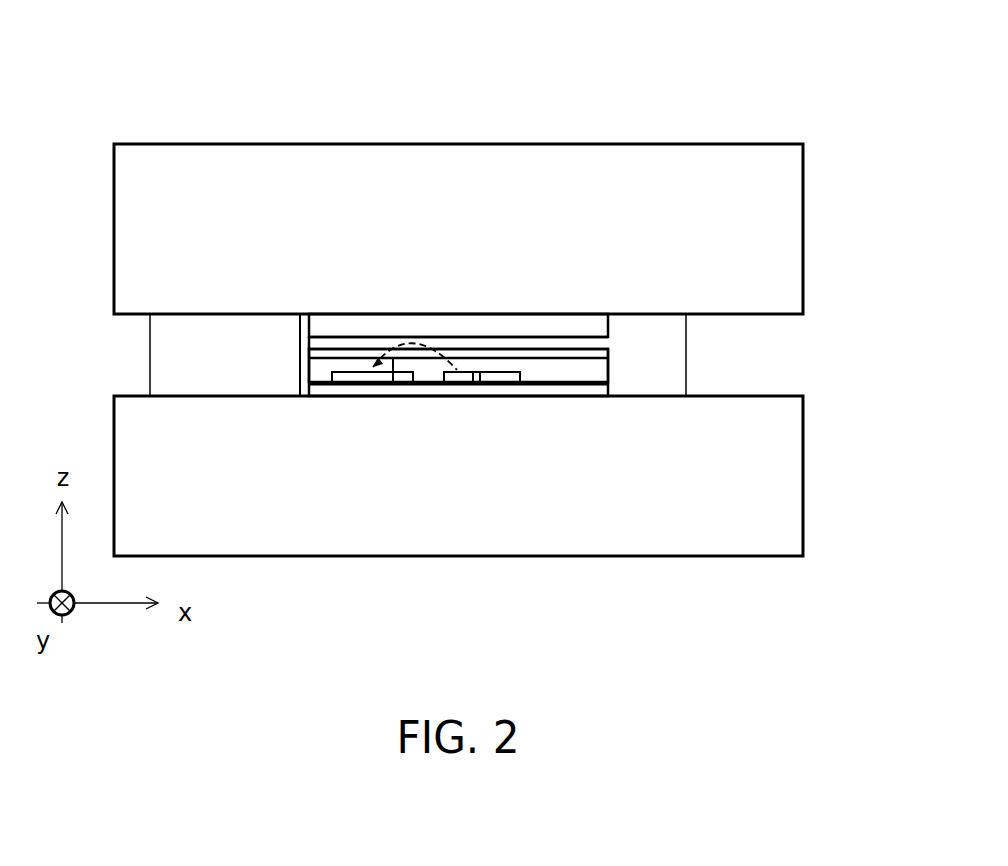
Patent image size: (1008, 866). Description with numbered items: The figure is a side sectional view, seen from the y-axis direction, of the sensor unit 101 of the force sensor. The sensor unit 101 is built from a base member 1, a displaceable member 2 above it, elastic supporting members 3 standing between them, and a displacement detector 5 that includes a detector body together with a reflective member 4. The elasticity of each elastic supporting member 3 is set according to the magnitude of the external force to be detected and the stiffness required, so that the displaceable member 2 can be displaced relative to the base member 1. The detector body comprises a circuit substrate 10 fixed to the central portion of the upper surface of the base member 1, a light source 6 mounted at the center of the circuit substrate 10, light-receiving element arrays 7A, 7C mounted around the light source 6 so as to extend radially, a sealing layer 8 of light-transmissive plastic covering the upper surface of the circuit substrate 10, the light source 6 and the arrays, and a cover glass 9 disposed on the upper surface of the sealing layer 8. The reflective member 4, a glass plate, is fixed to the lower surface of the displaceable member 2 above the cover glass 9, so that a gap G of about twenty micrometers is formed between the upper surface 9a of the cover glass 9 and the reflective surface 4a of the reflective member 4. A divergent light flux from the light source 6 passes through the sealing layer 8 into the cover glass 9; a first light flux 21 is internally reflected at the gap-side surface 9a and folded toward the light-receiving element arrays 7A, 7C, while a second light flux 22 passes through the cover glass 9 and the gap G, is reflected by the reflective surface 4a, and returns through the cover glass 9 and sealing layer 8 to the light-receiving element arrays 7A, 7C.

The sensor unit 101 is at (753, 103).
The base member 1 is at (297, 552).
The displaceable member 2 is at (586, 142).
The elastic supporting member 3 is at (148, 370).
The reflective member 4 is at (610, 318).
The reflective surface 4a is at (556, 338).
The displacement detector 5 is at (318, 395).
The light source 6 is at (455, 385).
The light-receiving element array 7A is at (507, 387).
The light-receiving element array 7C is at (383, 385).
The sealing layer 8 is at (607, 386).
The cover glass 9 is at (607, 370).
The upper surface 9a is at (604, 346).
The circuit substrate 10 is at (611, 397).
The first light flux 21 is at (393, 385).
The second light flux 22 is at (401, 338).
The gap G is at (308, 341).